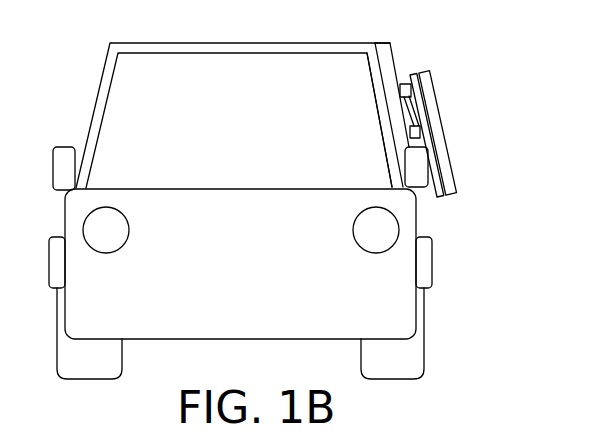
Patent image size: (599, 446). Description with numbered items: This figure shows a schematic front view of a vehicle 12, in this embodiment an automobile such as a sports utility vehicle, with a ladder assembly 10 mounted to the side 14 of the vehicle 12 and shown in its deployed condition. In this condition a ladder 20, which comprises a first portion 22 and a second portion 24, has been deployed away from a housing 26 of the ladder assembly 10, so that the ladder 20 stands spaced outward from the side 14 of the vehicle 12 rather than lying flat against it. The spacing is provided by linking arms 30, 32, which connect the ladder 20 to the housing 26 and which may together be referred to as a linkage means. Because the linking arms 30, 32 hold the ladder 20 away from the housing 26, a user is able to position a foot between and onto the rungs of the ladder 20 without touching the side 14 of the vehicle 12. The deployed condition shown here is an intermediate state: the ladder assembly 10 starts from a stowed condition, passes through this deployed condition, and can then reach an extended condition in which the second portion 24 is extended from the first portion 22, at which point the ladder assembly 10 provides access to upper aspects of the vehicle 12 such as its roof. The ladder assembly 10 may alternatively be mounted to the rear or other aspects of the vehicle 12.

The ladder assembly 10 is at (433, 154).
The vehicle 12 is at (150, 95).
The side 14 is at (378, 67).
The ladder 20 is at (475, 158).
The first portion 22 is at (440, 196).
The second portion 24 is at (453, 165).
The housing 26 is at (388, 75).
The linking arm 30 is at (405, 98).
The linking arm 32 is at (414, 130).